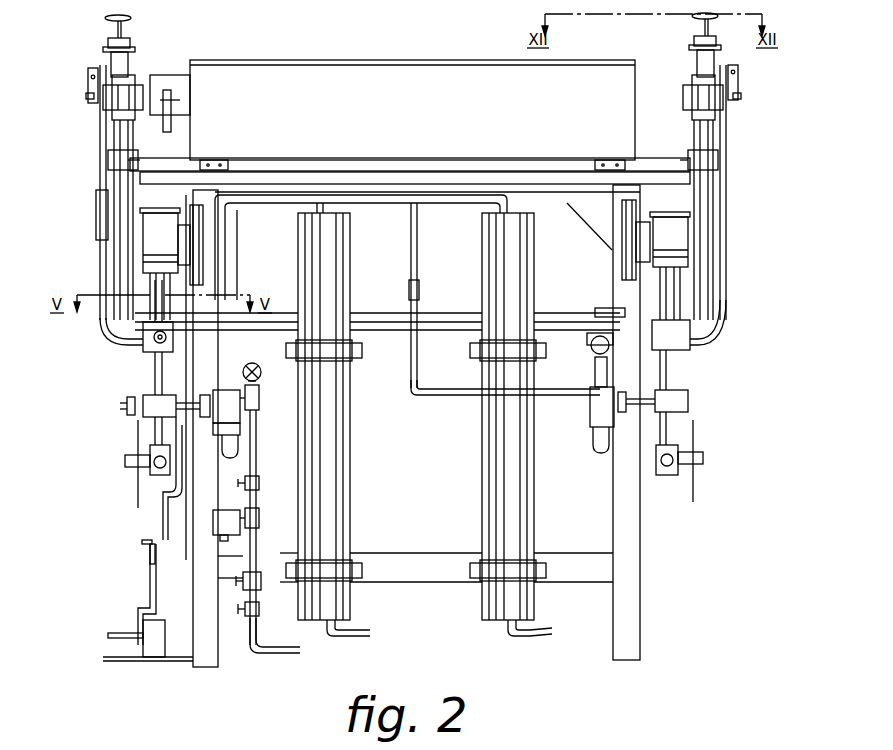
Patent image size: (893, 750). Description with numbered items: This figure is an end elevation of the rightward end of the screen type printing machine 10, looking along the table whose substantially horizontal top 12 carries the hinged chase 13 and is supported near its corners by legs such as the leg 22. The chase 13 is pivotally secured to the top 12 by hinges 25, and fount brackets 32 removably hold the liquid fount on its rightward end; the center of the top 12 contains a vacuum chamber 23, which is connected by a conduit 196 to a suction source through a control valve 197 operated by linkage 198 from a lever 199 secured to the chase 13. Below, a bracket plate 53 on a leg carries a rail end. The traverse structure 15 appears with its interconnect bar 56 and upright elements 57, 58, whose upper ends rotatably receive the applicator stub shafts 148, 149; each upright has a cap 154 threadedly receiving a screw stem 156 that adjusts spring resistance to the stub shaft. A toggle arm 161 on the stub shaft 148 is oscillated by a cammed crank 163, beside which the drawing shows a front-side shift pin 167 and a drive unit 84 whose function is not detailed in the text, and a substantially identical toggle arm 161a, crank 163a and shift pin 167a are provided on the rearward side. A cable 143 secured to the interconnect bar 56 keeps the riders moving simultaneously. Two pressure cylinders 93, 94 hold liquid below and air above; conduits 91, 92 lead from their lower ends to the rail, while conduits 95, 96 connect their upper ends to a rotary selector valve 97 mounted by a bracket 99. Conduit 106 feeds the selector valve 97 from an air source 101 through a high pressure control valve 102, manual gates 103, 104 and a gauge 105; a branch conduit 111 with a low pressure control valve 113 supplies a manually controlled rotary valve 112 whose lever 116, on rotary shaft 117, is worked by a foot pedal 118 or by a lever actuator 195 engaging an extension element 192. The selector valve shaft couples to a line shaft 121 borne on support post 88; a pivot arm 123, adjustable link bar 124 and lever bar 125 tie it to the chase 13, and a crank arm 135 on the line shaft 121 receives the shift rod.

The screen type printing machine 10 is at (652, 508).
The table top 12 is at (372, 178).
The chase 13 is at (310, 168).
The traverse structure 15 is at (92, 207).
The leg 22 is at (628, 648).
The vacuum chamber 23 is at (548, 188).
The hinges 25 is at (216, 164).
The fount brackets 32 is at (183, 158).
The bracket plate 53 is at (205, 273).
The interconnect bar 56 is at (548, 325).
The upright element 57 is at (118, 273).
The upright element 58 is at (705, 262).
The motor 84 is at (152, 230).
The support post 88 is at (155, 438).
The conduit 91 is at (358, 636).
The conduit 92 is at (545, 636).
The pressure cylinder 93 is at (338, 450).
The pressure cylinder 94 is at (492, 448).
The conduit 95 is at (262, 208).
The conduit 96 is at (440, 200).
The selector valve 97 is at (235, 418).
The bracket 99 is at (235, 450).
The source of air pressure 101 is at (304, 653).
The high pressure control valve 102 is at (258, 582).
The gate 103 is at (258, 616).
The gate 104 is at (258, 480).
The gauge 105 is at (262, 375).
The conduit 106 is at (259, 512).
The conduit 111 is at (213, 520).
The rotary valve 112 is at (157, 655).
The low pressure control valve 113 is at (235, 530).
The lever 116 is at (150, 583).
The rotary shaft 117 is at (150, 620).
The foot pedal 118 is at (108, 637).
The line shaft 121 is at (125, 412).
The pivot arm 123 is at (120, 404).
The adjustable link bar 124 is at (125, 196).
The lever bar 125 is at (128, 160).
The crank arm 135 is at (150, 367).
The cable 143 is at (352, 312).
The stub shaft 148 is at (86, 96).
The stub shaft 149 is at (741, 96).
The cap 154 is at (133, 42).
The screw stem 156 is at (108, 22).
The toggle arm 161 is at (88, 77).
The toggle arm 161a is at (739, 74).
The cammed crank 163 is at (96, 247).
The crank 163a is at (728, 195).
The arm 167 is at (127, 462).
The shift pin 167a is at (703, 458).
The extension element 192 is at (147, 540).
The lever actuator 195 is at (148, 548).
The conduit 196 is at (470, 396).
The control valve 197 is at (590, 410).
The linkage 198 is at (715, 326).
The lever 199 is at (690, 160).